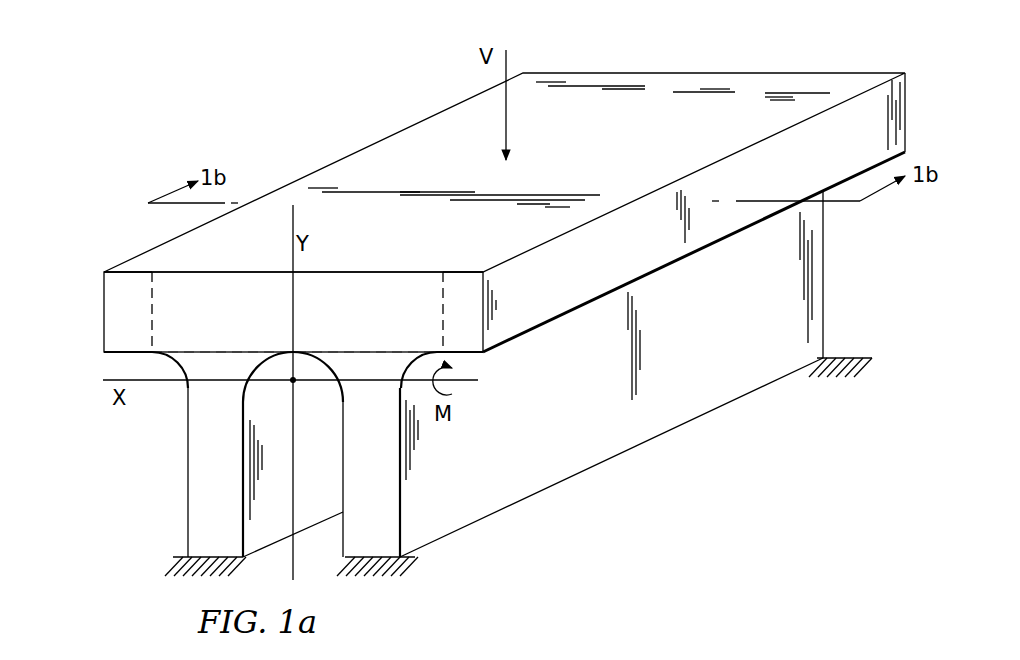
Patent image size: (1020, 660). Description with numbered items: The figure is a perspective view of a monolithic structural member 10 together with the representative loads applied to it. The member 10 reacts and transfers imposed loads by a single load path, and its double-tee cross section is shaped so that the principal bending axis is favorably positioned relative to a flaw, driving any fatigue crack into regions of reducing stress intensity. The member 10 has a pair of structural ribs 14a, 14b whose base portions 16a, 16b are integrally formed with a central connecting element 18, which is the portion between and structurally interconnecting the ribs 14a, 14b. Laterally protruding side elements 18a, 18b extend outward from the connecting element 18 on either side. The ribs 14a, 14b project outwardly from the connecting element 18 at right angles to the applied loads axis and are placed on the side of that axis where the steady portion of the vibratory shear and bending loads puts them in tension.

The monolithic structural member 10 is at (742, 98).
The structural rib 14a is at (383, 510).
The structural rib 14b is at (203, 508).
The base portion 16a is at (378, 348).
The base portion 16b is at (178, 357).
The central connecting element 18 is at (361, 288).
The laterally protruding side element 18a is at (472, 317).
The laterally protruding side element 18b is at (117, 305).